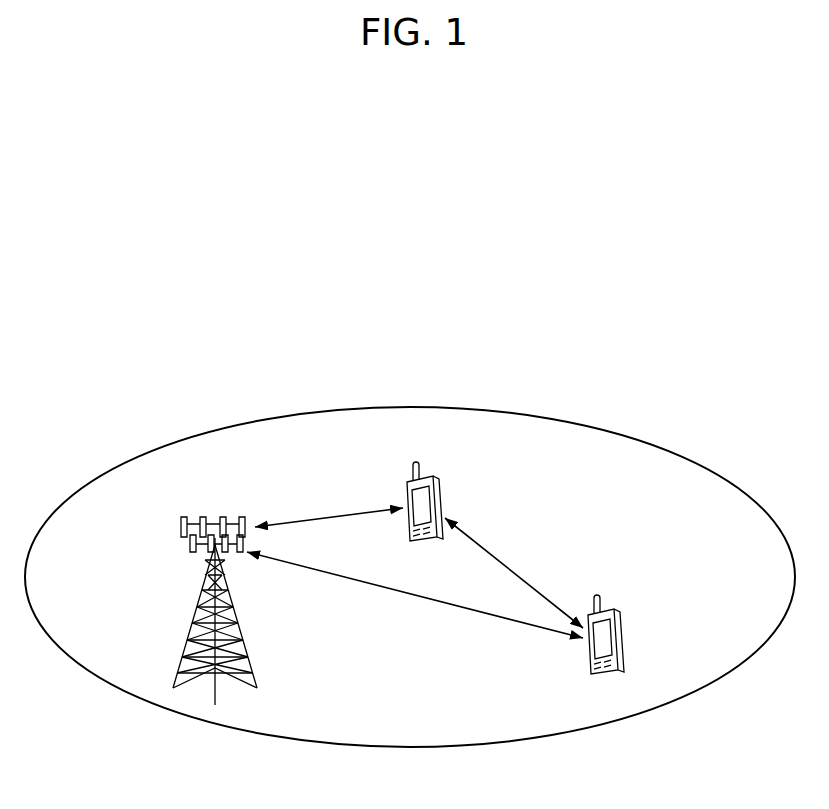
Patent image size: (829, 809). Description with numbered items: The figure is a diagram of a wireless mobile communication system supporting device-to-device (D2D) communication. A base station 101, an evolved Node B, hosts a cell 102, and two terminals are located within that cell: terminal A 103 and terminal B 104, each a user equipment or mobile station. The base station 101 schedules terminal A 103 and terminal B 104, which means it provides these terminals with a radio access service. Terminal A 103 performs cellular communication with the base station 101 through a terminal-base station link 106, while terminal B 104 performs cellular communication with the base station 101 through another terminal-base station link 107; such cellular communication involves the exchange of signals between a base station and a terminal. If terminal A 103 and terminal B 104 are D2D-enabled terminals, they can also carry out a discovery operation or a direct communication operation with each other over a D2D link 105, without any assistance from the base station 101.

The base station 101 is at (200, 622).
The cell 102 is at (603, 427).
The terminal A 103 is at (427, 476).
The terminal B 104 is at (613, 610).
The D2D link 105 is at (514, 572).
The terminal-base station link 106 is at (328, 514).
The terminal-base station link 107 is at (412, 598).